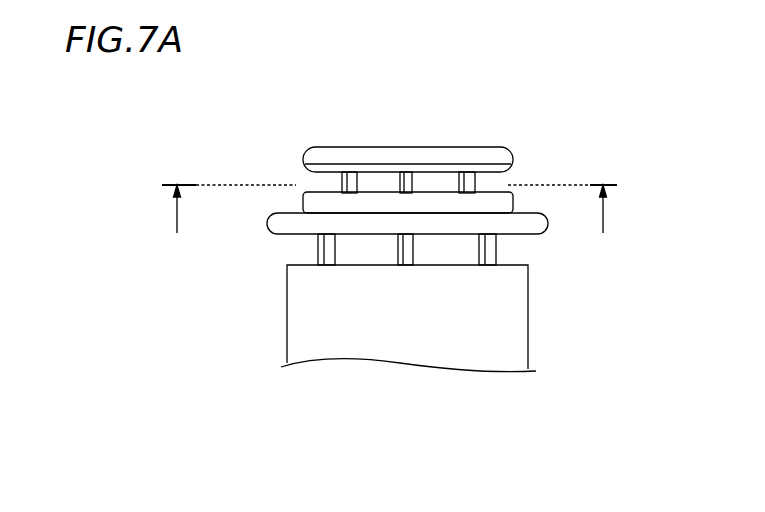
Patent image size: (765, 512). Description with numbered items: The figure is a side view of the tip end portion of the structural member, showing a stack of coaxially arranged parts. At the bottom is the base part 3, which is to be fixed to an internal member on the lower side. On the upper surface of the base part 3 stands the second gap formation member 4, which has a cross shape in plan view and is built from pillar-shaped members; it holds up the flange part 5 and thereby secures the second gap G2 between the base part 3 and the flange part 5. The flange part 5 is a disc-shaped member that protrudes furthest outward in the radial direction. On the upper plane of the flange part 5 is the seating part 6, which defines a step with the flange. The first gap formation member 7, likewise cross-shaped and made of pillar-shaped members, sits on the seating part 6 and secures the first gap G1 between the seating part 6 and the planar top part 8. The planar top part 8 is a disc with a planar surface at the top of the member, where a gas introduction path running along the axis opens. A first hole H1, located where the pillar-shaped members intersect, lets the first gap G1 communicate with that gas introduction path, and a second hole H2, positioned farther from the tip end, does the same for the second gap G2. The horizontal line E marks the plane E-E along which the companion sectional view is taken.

The base part 3 is at (529, 309).
The second gap formation member 4 is at (318, 255).
The flange part 5 is at (268, 222).
The seating part 6 is at (303, 202).
The first gap formation member 7 is at (342, 186).
The planar top part 8 is at (306, 148).
The first hole H1 is at (408, 193).
The second hole H2 is at (412, 266).
The first gap G1 is at (483, 182).
The second gap G2 is at (508, 248).
The line E- E is at (389, 223).